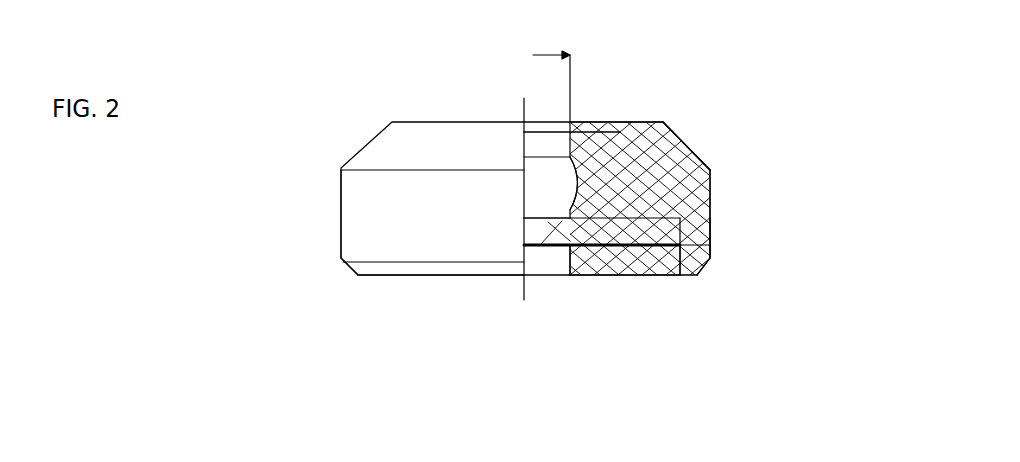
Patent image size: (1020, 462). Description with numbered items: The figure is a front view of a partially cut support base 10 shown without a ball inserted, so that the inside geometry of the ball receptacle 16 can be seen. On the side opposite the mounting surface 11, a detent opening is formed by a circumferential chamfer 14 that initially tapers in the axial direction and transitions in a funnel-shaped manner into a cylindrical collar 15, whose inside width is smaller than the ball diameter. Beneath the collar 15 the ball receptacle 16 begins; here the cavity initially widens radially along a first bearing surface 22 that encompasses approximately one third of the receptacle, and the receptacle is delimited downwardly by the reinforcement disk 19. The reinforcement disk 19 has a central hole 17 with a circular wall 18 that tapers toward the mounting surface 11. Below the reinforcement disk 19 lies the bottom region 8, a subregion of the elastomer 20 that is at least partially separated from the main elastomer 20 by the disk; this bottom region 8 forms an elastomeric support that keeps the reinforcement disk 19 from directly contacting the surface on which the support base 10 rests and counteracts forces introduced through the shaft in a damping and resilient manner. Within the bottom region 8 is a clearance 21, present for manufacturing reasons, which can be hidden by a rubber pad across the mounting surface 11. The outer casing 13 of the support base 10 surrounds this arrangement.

The bottom region 8 is at (655, 275).
The support base 10 is at (703, 145).
The mounting surface 11 is at (385, 278).
The casing 13 is at (712, 238).
The chamfer 14 is at (628, 128).
The collar 15 is at (688, 130).
The ball receptacle 16 is at (543, 188).
The hole 17 is at (542, 227).
The wall 18 is at (607, 275).
The reinforcement disk 19 is at (695, 275).
The elastomer 20 is at (712, 164).
The clearance 21 is at (510, 276).
The first bearing surface 22 is at (552, 112).